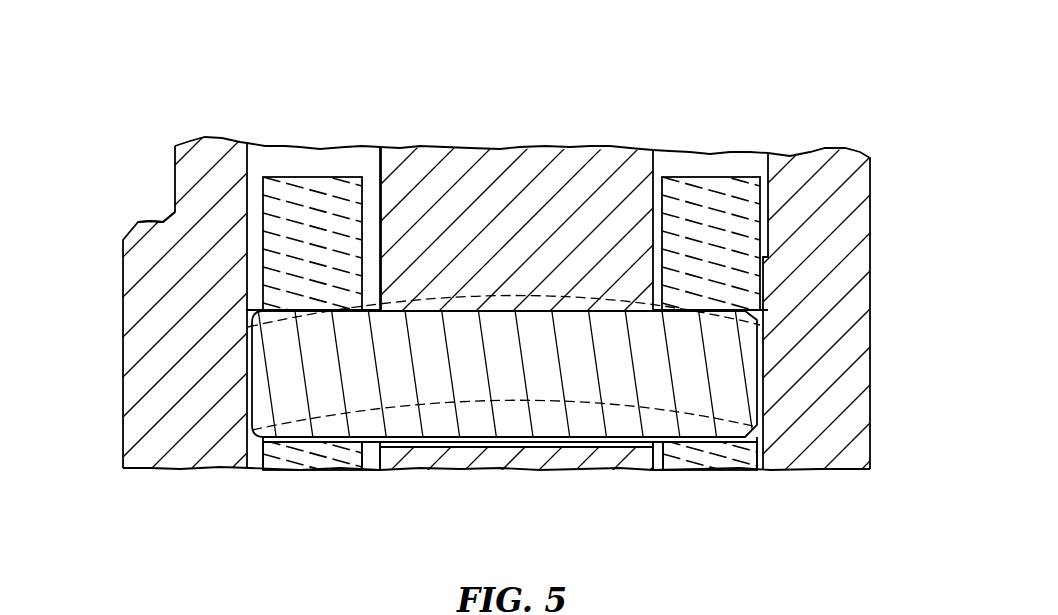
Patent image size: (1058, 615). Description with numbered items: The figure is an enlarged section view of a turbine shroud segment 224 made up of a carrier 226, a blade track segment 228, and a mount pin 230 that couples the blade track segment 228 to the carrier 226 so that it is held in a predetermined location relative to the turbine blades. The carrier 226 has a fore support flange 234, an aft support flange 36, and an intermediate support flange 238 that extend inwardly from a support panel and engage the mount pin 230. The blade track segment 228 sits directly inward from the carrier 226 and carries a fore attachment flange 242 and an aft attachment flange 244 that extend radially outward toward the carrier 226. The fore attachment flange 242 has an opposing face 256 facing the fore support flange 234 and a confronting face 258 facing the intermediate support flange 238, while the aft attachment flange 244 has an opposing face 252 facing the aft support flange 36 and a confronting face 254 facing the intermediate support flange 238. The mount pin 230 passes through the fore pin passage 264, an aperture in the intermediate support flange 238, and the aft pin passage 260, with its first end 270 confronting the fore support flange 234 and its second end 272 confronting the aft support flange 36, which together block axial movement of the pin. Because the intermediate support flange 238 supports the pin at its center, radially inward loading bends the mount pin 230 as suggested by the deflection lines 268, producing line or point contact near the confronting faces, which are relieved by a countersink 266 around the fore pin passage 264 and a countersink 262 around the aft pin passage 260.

The turbine shroud segment 224 is at (128, 66).
The carrier 226 is at (100, 195).
The fore support flange 234 is at (145, 185).
The blade track segment 228 is at (399, 82).
The fore attachment flange 242 is at (315, 122).
The confronting face 258 is at (370, 220).
The opposing face 256 is at (263, 213).
The intermediate support flange 238 is at (513, 157).
The aft attachment flange 244 is at (703, 140).
The confronting face 254 is at (662, 227).
The opposing face 252 is at (770, 212).
The aft support flange 36 is at (878, 162).
The second end 272 is at (762, 380).
The first end 270 is at (247, 340).
The mount pin 230 is at (232, 389).
The countersink 262 is at (650, 445).
The fore pin passage 264 is at (326, 470).
The countersink 266 is at (373, 447).
The deflection lines 268 is at (522, 400).
The aft pin passage 260 is at (672, 463).